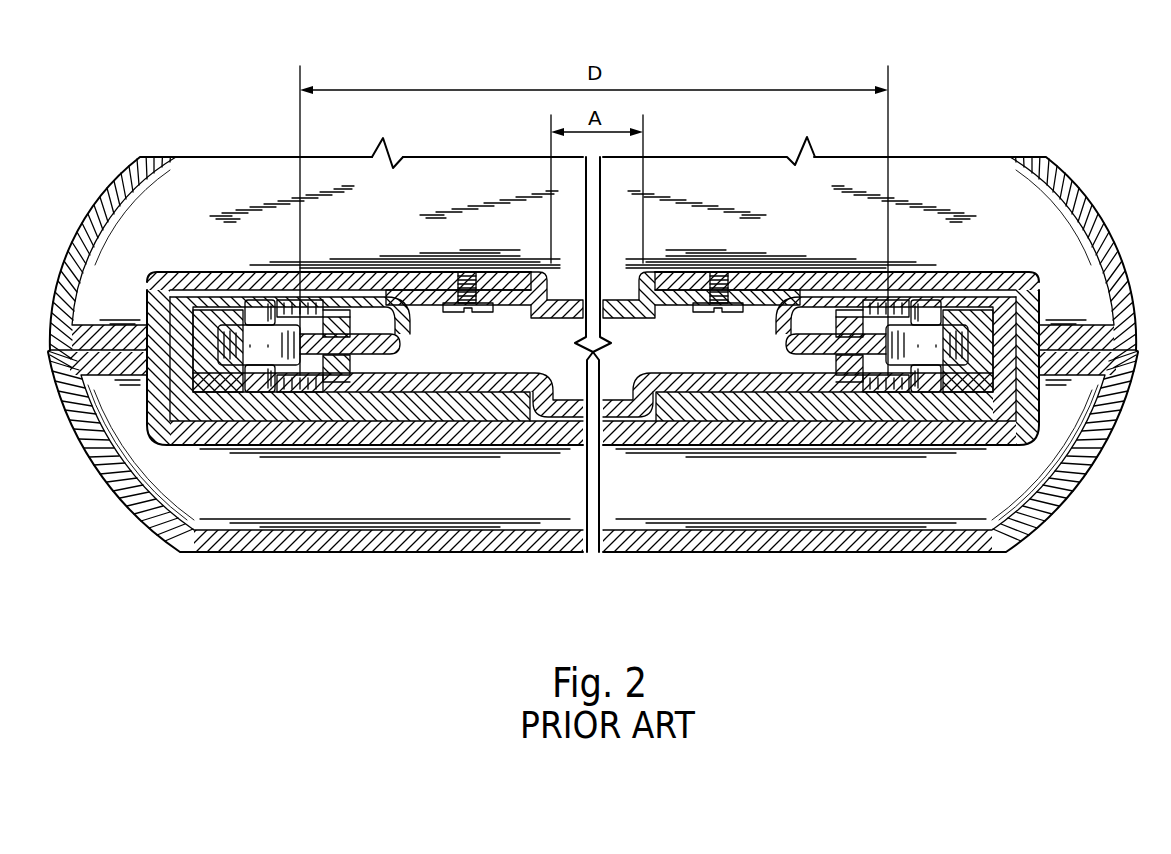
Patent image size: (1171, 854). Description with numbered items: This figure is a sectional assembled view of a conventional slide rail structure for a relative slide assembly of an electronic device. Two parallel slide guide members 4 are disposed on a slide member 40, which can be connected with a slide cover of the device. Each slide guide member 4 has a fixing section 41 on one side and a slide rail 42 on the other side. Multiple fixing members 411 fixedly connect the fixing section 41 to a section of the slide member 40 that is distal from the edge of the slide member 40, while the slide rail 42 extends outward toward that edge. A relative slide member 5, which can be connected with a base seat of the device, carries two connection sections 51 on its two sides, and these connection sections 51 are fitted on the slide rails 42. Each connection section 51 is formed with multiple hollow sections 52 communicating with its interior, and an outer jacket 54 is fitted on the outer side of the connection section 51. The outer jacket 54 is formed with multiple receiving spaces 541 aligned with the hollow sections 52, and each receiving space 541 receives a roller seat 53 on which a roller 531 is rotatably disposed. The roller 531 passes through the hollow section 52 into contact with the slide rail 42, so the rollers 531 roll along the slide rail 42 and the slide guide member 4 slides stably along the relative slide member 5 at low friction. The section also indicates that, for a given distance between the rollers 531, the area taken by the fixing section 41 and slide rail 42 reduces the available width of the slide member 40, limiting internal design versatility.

The slide guide member 4 is at (903, 256).
The slide member 40 is at (973, 278).
The fixing section 41 is at (703, 307).
The fixing member 411 is at (721, 270).
The slide rail 42 is at (840, 334).
The relative slide member 5 is at (640, 400).
The connection section 51 is at (858, 303).
The hollow section 52 is at (887, 377).
The roller seat 53 is at (1013, 397).
The roller 531 is at (937, 342).
The outer jacket 54 is at (782, 392).
The receiving space 541 is at (985, 300).